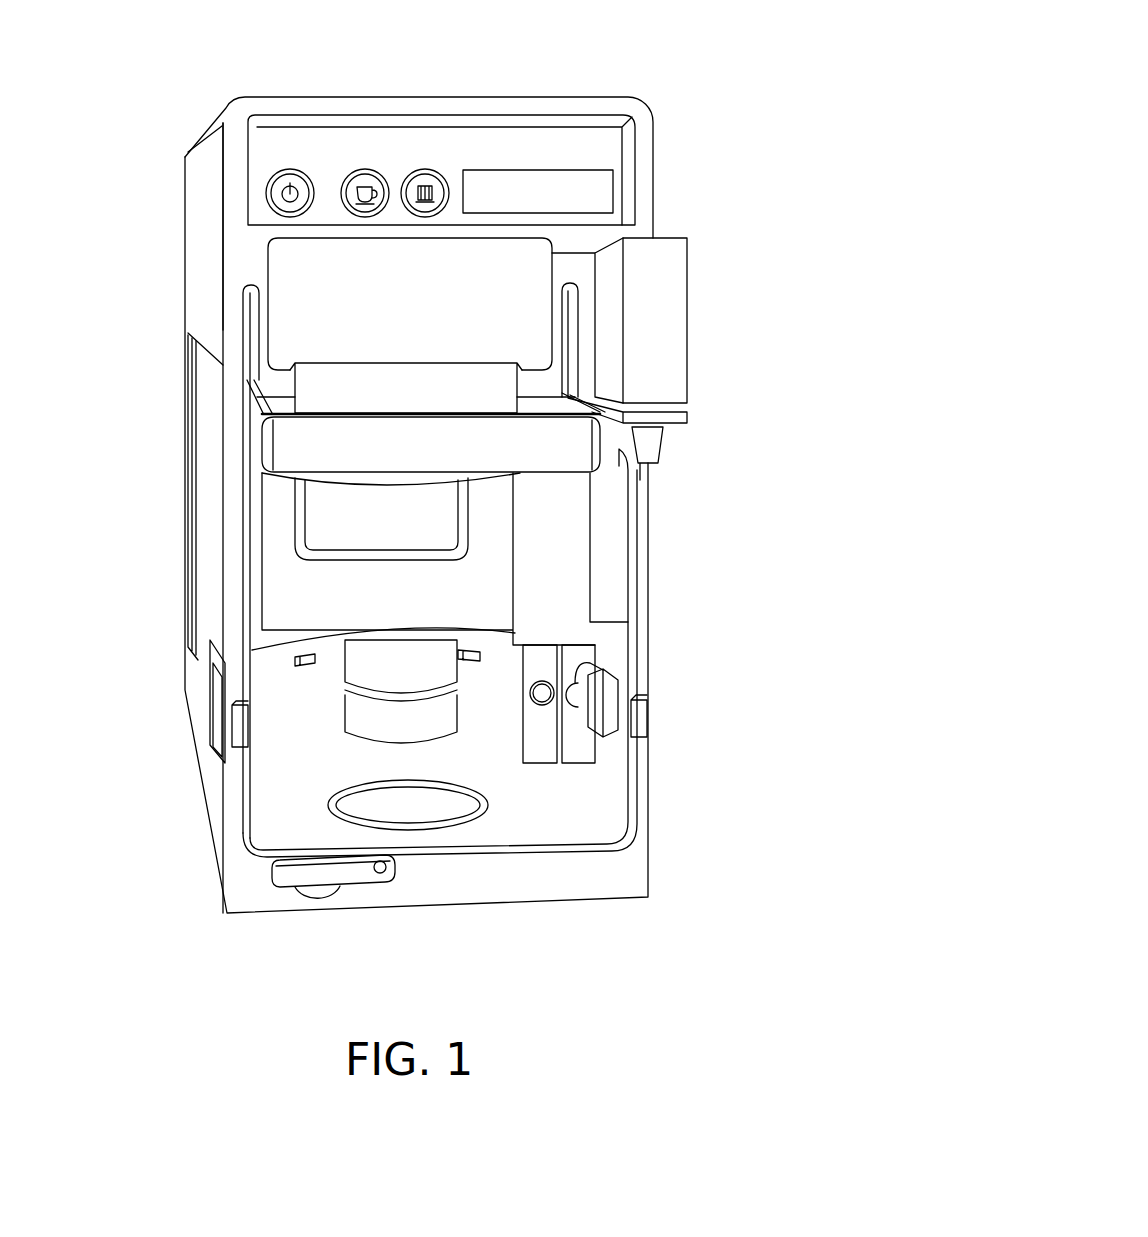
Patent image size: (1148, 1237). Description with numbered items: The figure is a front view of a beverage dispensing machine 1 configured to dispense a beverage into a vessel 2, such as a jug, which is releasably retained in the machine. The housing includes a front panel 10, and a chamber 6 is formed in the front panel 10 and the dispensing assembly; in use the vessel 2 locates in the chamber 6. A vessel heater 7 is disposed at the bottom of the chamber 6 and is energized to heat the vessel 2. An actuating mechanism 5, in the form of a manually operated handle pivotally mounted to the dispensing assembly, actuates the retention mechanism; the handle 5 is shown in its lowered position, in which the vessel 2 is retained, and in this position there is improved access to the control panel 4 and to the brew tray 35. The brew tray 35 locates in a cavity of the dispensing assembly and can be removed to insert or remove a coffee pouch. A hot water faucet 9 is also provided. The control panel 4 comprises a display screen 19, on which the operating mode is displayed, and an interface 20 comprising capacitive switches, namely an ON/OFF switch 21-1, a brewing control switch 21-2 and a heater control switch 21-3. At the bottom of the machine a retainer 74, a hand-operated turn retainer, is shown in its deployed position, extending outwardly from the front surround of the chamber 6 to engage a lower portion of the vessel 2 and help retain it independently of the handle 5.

The beverage dispensing machine 1 is at (793, 48).
The vessel 2 is at (203, 275).
The control panel 4 is at (477, 126).
The actuating mechanism 5 is at (264, 432).
The chamber 6 is at (500, 587).
The vessel heater 7 is at (465, 805).
The hot water faucet 9 is at (712, 298).
The front panel 10 is at (230, 244).
The display screen 19 is at (543, 180).
The interface 20 is at (232, 168).
The ON/OFF switch 21-1 is at (270, 182).
The brewing control switch 21-2 is at (366, 177).
The heater control switch 21-3 is at (428, 170).
The brew tray 35 is at (413, 304).
The retainer 74 is at (337, 870).